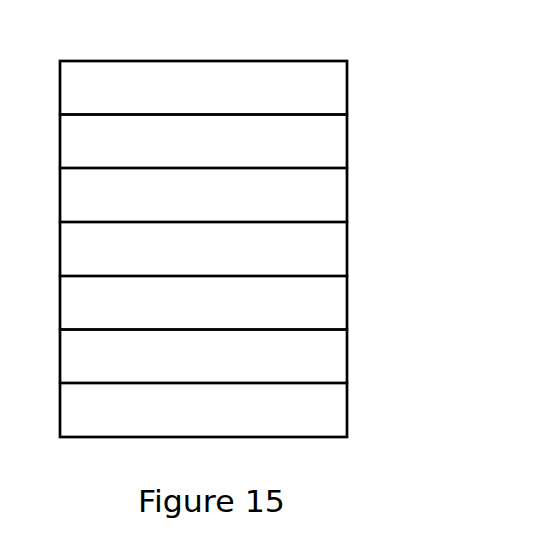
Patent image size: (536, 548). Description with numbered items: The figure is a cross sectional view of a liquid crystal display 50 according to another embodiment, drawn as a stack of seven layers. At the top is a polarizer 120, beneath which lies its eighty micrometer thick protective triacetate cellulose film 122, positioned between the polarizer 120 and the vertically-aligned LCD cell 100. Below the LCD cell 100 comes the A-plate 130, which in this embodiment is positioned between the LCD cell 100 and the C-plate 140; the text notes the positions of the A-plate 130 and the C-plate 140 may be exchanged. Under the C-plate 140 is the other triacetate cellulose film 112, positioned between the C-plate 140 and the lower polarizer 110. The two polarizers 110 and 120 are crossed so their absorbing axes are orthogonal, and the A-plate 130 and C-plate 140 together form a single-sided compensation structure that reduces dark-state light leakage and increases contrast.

The liquid crystal display 50 is at (195, 40).
The polarizer 120 is at (203, 88).
The triacetate cellulose film 122 is at (203, 142).
The LCD cell 100 is at (203, 195).
The A-plate 130 is at (203, 249).
The C-plate 140 is at (203, 303).
The triacetate cellulose film 112 is at (203, 357).
The polarizer 110 is at (203, 410).